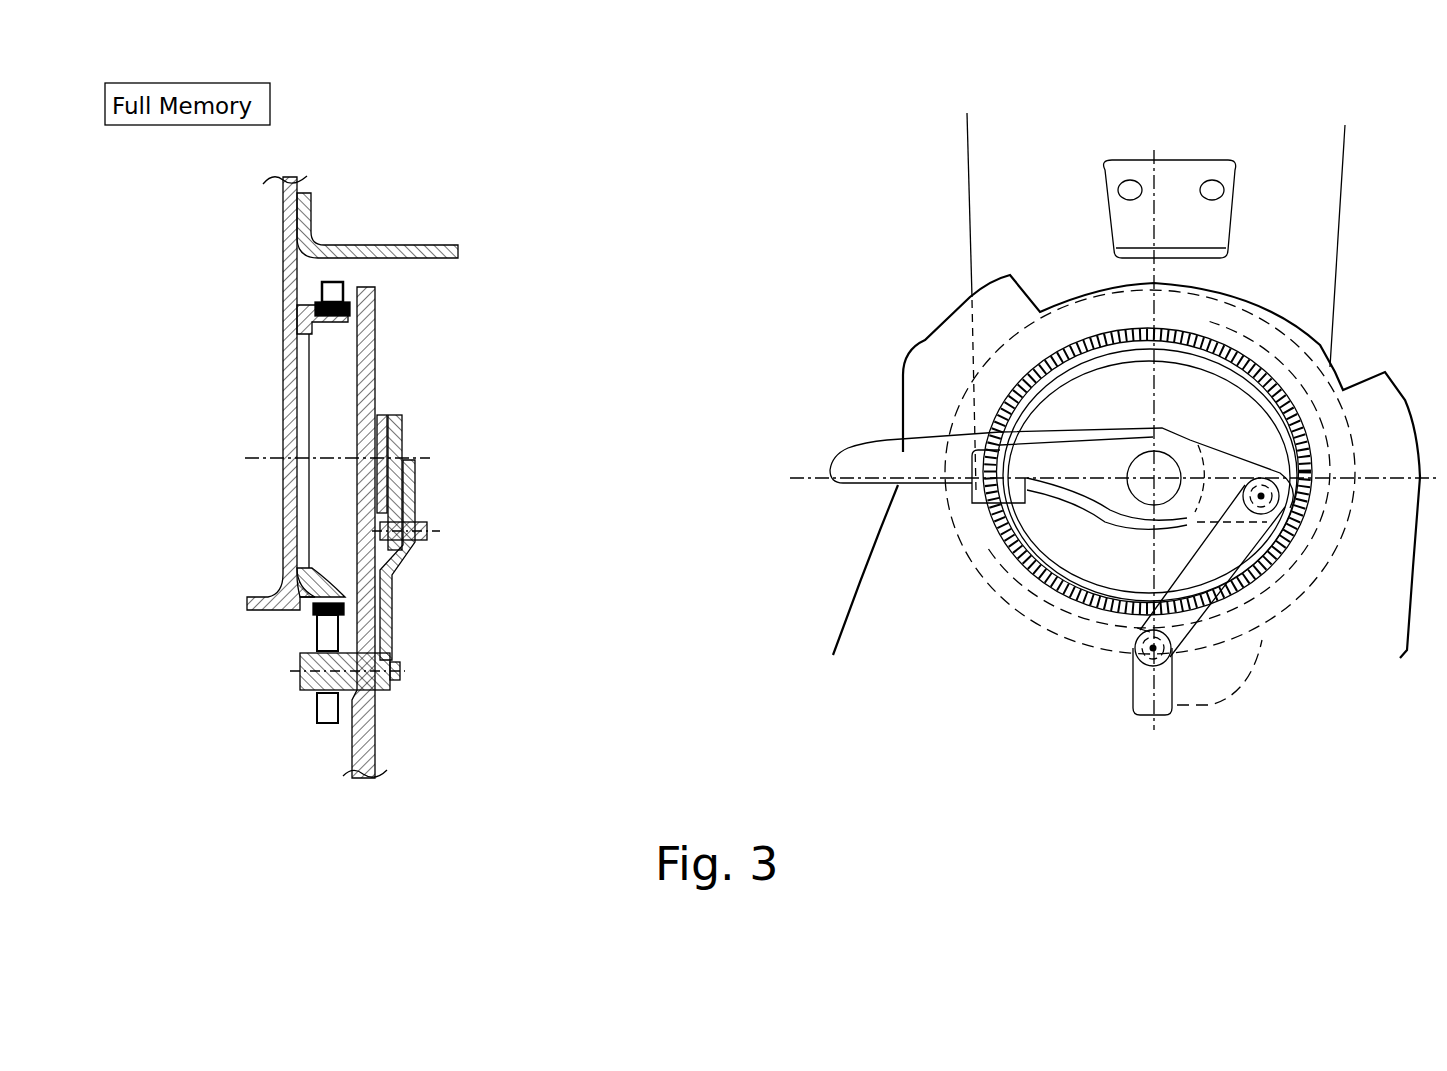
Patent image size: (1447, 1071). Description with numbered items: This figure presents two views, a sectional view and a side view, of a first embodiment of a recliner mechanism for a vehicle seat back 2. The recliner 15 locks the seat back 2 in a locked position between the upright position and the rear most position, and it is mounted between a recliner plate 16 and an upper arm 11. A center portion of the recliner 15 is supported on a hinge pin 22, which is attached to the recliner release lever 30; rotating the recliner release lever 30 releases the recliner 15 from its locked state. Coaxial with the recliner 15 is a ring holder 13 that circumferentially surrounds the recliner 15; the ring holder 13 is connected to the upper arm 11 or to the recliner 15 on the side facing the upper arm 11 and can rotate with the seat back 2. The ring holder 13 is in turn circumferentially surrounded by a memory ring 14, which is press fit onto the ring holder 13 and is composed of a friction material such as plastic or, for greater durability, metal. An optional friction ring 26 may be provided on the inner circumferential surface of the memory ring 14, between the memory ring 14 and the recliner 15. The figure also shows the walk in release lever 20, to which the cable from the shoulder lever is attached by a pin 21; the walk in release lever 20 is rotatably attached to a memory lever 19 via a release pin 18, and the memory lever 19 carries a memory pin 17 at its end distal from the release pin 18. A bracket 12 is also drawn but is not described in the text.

The seat back 2 is at (1055, 358).
The upper arm 11 is at (290, 290).
The mounting bracket 12 is at (410, 249).
The ring holder 13 is at (297, 577).
The memory ring 14 is at (328, 707).
The recliner 15 is at (335, 398).
The recliner plate 16 is at (363, 740).
The memory pin 17 is at (302, 670).
The release pin 18 is at (427, 530).
The memory lever 19 is at (392, 567).
The walk in release lever 20 is at (400, 432).
The pin 21 is at (1300, 527).
The hinge pin 22 is at (1265, 577).
The friction ring 26 is at (302, 311).
The recliner release lever 30 is at (383, 415).